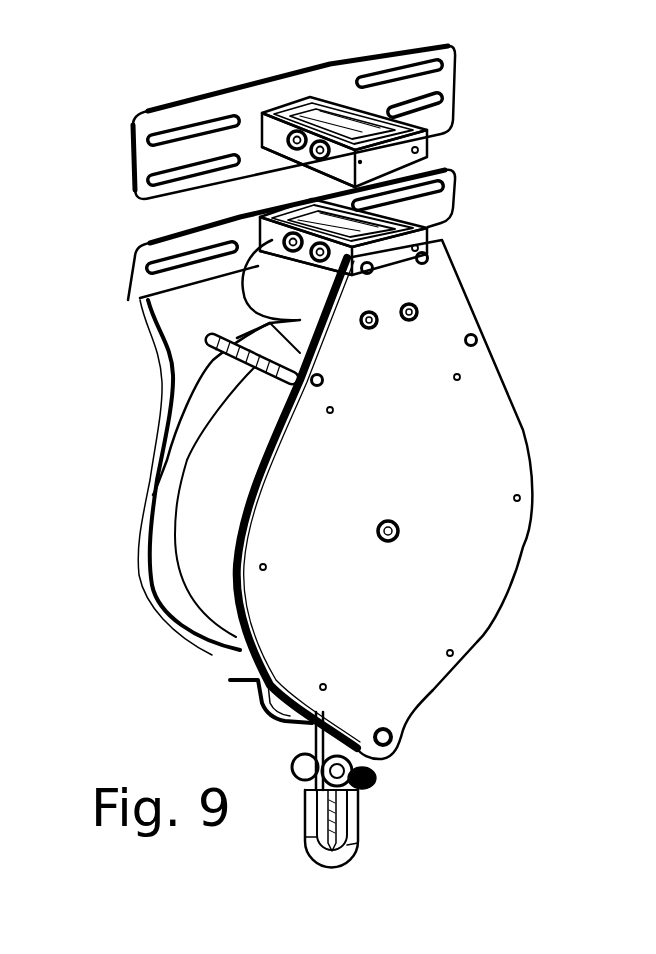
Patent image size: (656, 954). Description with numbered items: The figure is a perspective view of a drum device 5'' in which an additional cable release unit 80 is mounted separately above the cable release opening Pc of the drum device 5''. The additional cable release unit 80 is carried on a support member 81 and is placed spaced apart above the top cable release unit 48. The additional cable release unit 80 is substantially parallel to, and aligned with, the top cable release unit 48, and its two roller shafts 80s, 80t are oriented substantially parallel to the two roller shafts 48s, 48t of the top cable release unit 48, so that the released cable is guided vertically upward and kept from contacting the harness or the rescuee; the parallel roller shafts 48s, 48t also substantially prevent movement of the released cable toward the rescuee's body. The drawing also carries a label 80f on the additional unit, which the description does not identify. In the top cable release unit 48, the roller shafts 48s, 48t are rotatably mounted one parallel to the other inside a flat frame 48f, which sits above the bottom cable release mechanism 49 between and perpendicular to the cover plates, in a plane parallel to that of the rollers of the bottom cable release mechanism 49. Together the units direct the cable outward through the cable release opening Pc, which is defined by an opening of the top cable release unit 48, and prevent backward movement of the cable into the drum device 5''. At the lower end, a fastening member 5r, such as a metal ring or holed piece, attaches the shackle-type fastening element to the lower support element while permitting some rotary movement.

The support member 81 is at (148, 111).
The additional cable release unit 80 is at (333, 100).
The front face of upper clamp block 80f is at (267, 128).
The roller shaft 80t is at (318, 113).
The roller shaft 80s is at (347, 127).
The cable release opening Pc is at (300, 190).
The flat frame 48f is at (453, 207).
The upper cable release unit 48 is at (395, 230).
The roller shaft 48t is at (316, 222).
The roller shaft 48s is at (345, 230).
The bottom cable release mechanism 49 is at (287, 302).
The drum device 5'' is at (408, 499).
The fastening member 5r is at (347, 867).